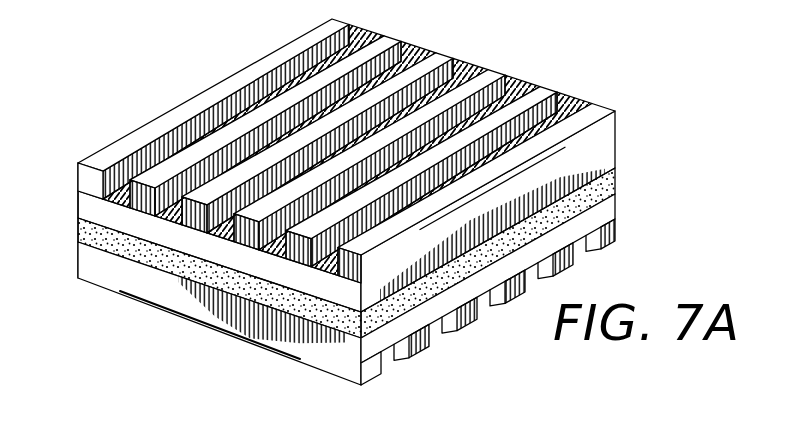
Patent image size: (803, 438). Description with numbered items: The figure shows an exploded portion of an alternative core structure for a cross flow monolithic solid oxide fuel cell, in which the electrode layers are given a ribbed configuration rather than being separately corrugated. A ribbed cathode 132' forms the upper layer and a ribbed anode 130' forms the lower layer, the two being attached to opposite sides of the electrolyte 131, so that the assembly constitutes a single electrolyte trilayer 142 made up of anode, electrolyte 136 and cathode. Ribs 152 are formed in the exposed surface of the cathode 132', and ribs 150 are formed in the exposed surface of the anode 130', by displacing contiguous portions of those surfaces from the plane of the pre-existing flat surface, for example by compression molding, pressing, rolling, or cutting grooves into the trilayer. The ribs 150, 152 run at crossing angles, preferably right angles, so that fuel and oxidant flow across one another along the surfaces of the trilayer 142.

The cathode 132' is at (333, 165).
The electrolyte 136 is at (283, 130).
The electrolyte trilayer 142 is at (386, 160).
The ribs 152 is at (503, 72).
The electrolyte 131 is at (167, 262).
The anode 130' is at (346, 300).
The ribs 150 is at (380, 360).